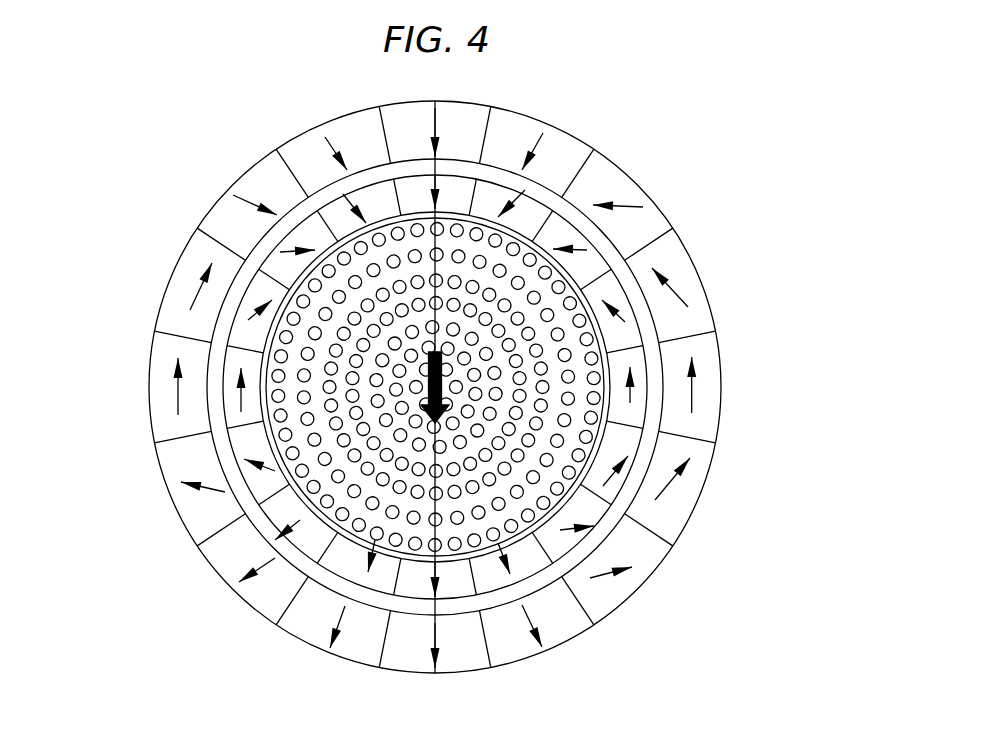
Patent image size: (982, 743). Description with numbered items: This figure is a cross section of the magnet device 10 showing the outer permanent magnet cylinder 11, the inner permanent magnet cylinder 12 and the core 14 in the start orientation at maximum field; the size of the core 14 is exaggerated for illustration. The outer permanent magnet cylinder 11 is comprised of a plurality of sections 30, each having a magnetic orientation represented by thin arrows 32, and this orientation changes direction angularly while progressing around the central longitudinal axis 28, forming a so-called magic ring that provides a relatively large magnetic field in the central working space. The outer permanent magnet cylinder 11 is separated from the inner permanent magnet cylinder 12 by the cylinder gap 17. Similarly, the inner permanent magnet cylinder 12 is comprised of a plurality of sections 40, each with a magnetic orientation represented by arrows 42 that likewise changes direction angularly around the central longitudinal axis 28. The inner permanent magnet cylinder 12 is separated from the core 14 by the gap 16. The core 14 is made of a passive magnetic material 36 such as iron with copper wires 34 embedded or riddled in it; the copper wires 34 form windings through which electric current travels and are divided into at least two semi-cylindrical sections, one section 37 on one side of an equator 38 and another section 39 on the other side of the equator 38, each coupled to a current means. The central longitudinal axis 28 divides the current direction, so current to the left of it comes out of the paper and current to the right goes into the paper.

The filter assembly 10 is at (122, 88).
The outer permanent magnet cylinder 11 is at (150, 405).
The inner permanent magnet cylinder 12 is at (413, 209).
The core 14 is at (302, 585).
The gap 16 is at (250, 500).
The cylinder gap 17 is at (222, 438).
The central longitudinal axis 28 is at (435, 268).
The sections 30 is at (598, 527).
The thin arrows 32 is at (185, 323).
The copper wires 34 is at (350, 280).
The passive magnetic material 36 is at (419, 560).
The section 37 is at (675, 327).
The equator 38 is at (605, 366).
The section 39 is at (612, 527).
The sections 40 is at (640, 275).
The arrows 42 is at (250, 318).